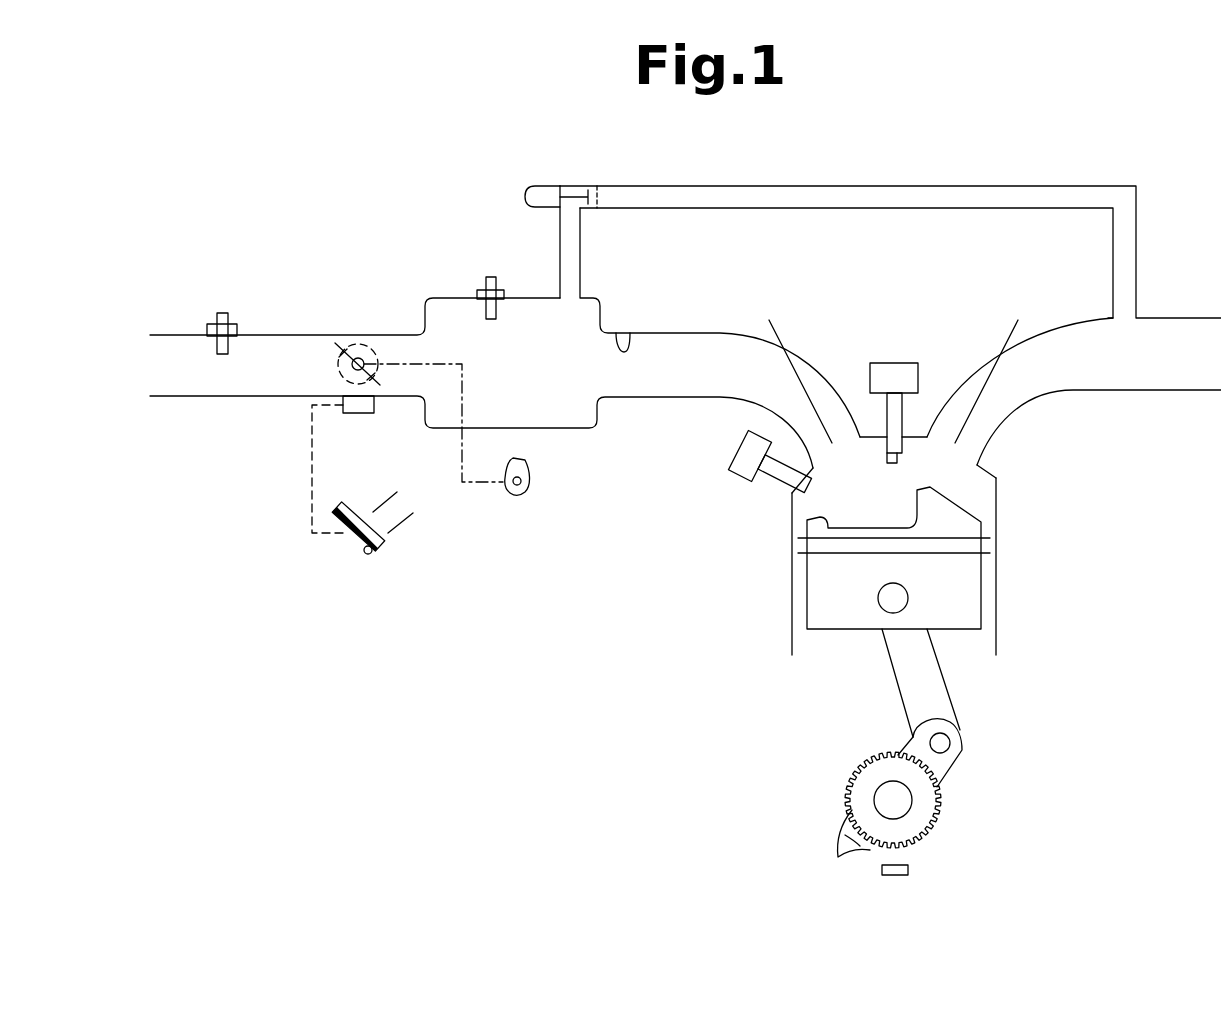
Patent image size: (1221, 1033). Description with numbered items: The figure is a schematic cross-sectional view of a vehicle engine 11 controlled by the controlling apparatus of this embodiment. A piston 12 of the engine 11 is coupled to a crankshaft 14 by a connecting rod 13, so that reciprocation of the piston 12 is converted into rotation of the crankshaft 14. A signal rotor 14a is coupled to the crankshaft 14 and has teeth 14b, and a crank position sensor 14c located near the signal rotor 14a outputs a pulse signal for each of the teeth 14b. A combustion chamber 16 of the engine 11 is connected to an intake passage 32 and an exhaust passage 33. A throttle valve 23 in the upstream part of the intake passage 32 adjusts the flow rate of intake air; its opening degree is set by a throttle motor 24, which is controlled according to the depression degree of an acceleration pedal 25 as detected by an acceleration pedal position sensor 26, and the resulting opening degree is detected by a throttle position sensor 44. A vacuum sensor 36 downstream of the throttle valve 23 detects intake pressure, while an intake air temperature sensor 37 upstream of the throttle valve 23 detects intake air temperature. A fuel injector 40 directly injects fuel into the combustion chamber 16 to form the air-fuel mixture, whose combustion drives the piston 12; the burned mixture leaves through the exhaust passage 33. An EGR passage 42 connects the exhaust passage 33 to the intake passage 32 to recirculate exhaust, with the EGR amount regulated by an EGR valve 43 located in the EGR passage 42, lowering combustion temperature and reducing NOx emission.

The engine 11 is at (1031, 570).
The piston 12 is at (970, 608).
The connecting rod 13 is at (950, 693).
The crankshaft 14 is at (900, 810).
The signal rotor 14a is at (870, 780).
The teeth 14b is at (837, 853).
The crank position sensor 14c is at (908, 870).
The combustion chamber 16 is at (967, 492).
The throttle valve 23 is at (353, 335).
The throttle motor 24 is at (378, 364).
The acceleration pedal 25 is at (337, 512).
The acceleration pedal position sensor 26 is at (367, 415).
The intake passage 32 is at (622, 335).
The exhaust passage 33 is at (1165, 333).
The vacuum sensor 36 is at (486, 280).
The intake air temperature sensor 37 is at (232, 324).
The fuel injector 40 is at (770, 484).
The EGR passage 42 is at (800, 208).
The EGR valve 43 is at (525, 196).
The throttle position sensor 44 is at (532, 492).